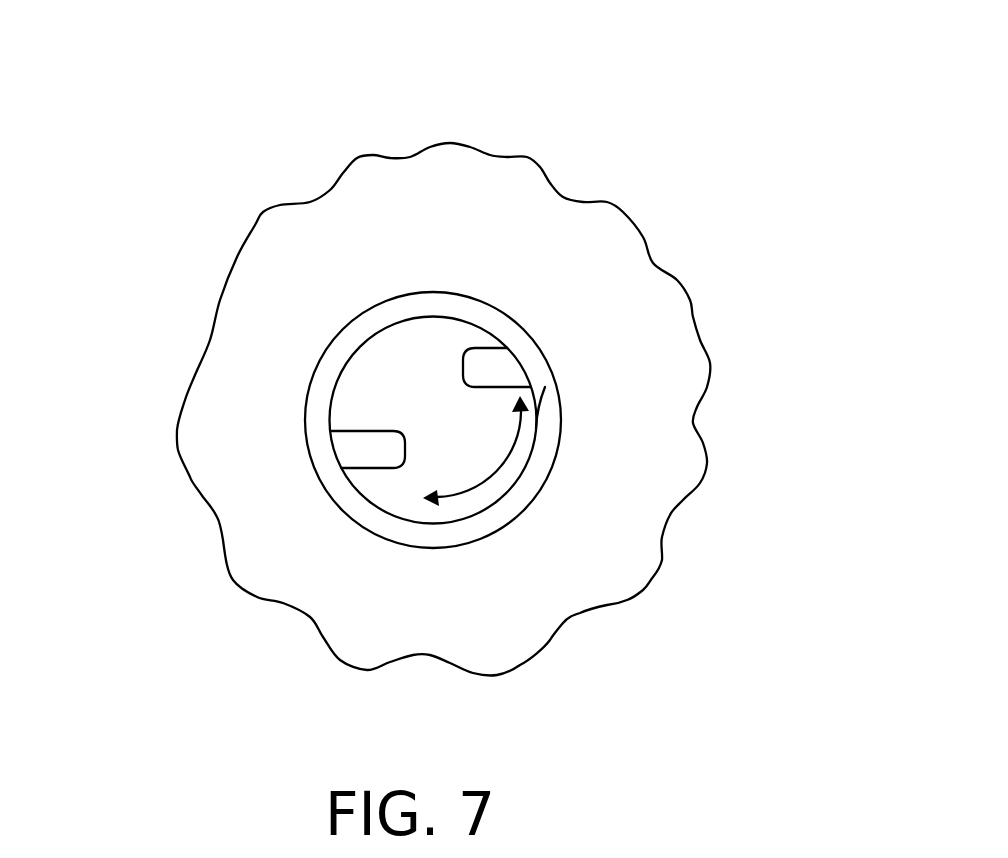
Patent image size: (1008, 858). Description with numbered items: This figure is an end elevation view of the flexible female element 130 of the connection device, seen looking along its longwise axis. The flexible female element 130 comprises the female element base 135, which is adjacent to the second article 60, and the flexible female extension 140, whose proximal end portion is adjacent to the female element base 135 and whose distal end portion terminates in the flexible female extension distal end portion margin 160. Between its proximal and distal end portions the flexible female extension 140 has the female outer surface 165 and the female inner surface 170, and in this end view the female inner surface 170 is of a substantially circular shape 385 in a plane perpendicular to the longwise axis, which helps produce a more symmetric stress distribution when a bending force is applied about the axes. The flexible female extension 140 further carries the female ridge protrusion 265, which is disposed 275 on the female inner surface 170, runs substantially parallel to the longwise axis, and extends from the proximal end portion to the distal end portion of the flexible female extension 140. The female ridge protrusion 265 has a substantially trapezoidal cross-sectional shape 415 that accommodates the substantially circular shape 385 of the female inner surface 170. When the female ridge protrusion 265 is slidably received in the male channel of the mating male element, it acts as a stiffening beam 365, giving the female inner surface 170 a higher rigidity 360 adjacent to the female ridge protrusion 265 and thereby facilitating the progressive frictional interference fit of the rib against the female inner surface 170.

The second article 60 is at (444, 409).
The flexible female element 130 is at (408, 339).
The female element base 135 is at (444, 409).
The flexible female extension 140 is at (336, 333).
The flexible female extension distal end portion margin 160 is at (336, 387).
The female outer surface 165 is at (336, 355).
The female inner surface 170 is at (332, 432).
The female ridge protrusion 265 is at (408, 359).
The disposed 275 is at (408, 359).
The rigidity 360 is at (540, 407).
The stiffening beam 365 is at (408, 359).
The substantially circular shape 385 is at (493, 482).
The substantially trapezoidal cross-sectional shape 415 is at (352, 451).